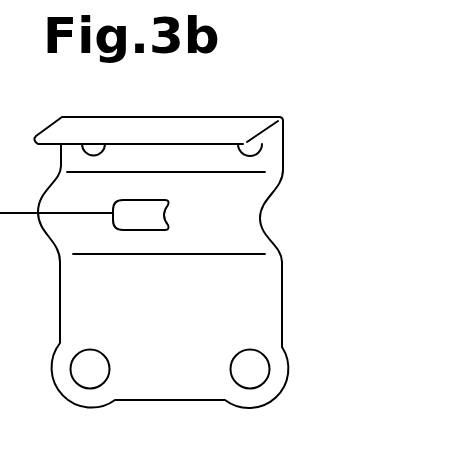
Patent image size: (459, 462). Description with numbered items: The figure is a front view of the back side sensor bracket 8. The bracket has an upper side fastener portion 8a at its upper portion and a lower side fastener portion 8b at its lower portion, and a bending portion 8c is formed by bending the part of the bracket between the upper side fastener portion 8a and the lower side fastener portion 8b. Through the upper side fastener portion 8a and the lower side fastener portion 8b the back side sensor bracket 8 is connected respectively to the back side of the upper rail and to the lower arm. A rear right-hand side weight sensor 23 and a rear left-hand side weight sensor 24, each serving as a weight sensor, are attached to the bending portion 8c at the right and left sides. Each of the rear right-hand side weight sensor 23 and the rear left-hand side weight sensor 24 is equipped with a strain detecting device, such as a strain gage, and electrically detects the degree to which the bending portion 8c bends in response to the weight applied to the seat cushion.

The back side sensor bracket 8 is at (194, 244).
The upper side fastener portion 8a is at (283, 152).
The lower side fastener portion 8b is at (284, 368).
The bending portion 8c is at (260, 240).
The rear left-hand side weight sensor 24 is at (188, 208).
The rear right-hand side weight sensor 23 is at (153, 199).